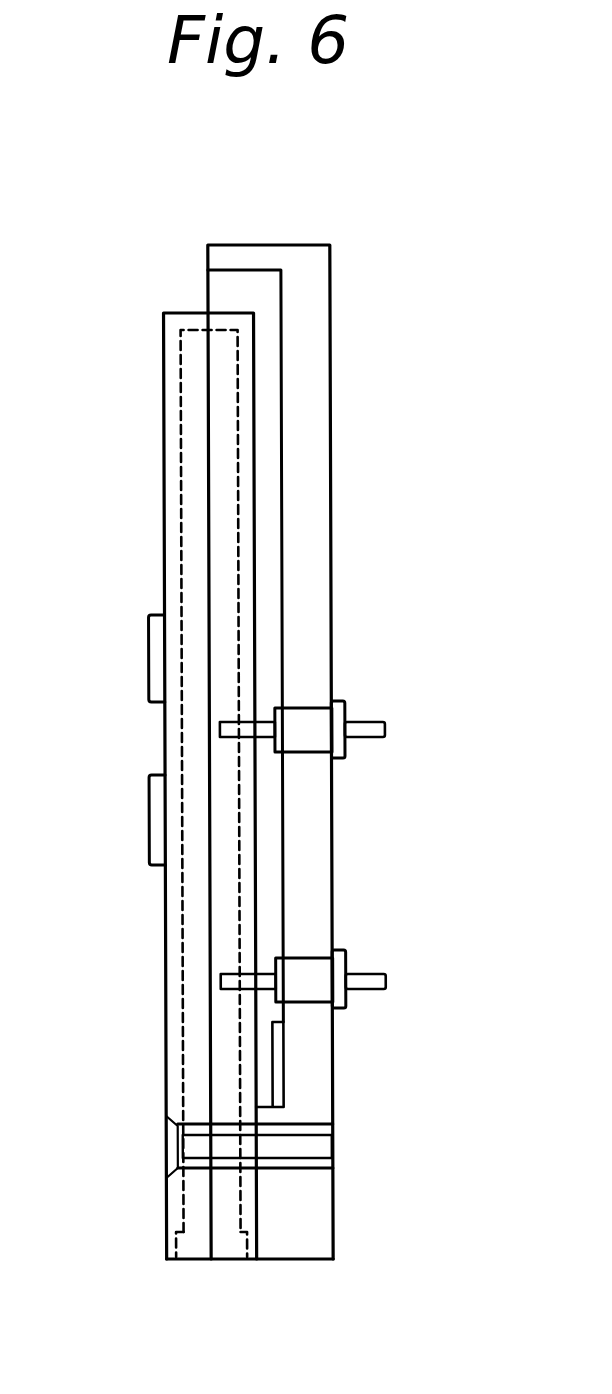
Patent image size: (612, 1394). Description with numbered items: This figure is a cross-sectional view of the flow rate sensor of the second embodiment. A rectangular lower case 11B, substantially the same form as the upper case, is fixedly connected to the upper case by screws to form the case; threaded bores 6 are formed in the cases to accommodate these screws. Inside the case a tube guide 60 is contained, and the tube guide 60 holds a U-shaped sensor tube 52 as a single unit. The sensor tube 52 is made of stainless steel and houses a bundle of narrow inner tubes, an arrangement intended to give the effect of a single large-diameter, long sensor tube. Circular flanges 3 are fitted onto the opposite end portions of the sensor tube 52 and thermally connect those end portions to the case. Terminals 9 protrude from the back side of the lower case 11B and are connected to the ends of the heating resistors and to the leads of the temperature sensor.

The lower case 11B is at (313, 370).
The tube guide 60 is at (164, 418).
The sensor tube 52 is at (193, 508).
The flange 3 is at (190, 1249).
The terminal 9 is at (362, 720).
The threaded bore 6 is at (320, 1148).